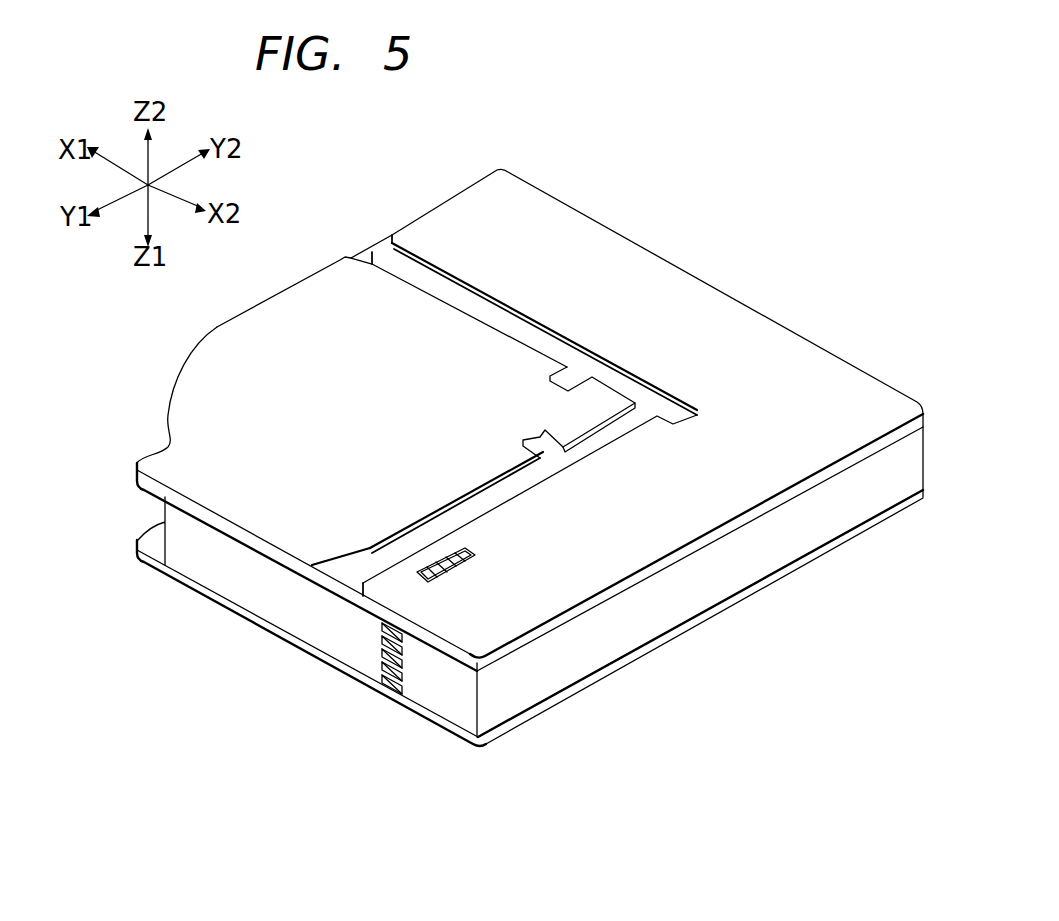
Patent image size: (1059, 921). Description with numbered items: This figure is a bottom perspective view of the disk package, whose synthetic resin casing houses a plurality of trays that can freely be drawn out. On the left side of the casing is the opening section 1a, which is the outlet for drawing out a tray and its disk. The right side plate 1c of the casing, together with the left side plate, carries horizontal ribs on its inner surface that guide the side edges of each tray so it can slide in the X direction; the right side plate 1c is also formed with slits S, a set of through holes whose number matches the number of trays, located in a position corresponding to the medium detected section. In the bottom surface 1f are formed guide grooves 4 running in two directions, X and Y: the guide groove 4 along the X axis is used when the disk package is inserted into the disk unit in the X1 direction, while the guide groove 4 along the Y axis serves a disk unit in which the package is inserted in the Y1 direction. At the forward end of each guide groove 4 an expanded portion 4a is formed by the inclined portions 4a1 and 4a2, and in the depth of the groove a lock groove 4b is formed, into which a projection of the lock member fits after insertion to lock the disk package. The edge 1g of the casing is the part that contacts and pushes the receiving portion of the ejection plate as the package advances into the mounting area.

The bottom surface 1f is at (735, 318).
The edge 1g is at (212, 327).
The opening section 1a is at (158, 516).
The right side plate 1c is at (202, 568).
The guide groove 4 is at (487, 307).
The expanded portion 4a is at (407, 134).
The inclined portion 4a1 is at (372, 262).
The inclined portion 4a2 is at (392, 235).
The lock groove 4b is at (540, 436).
The slits S is at (408, 664).